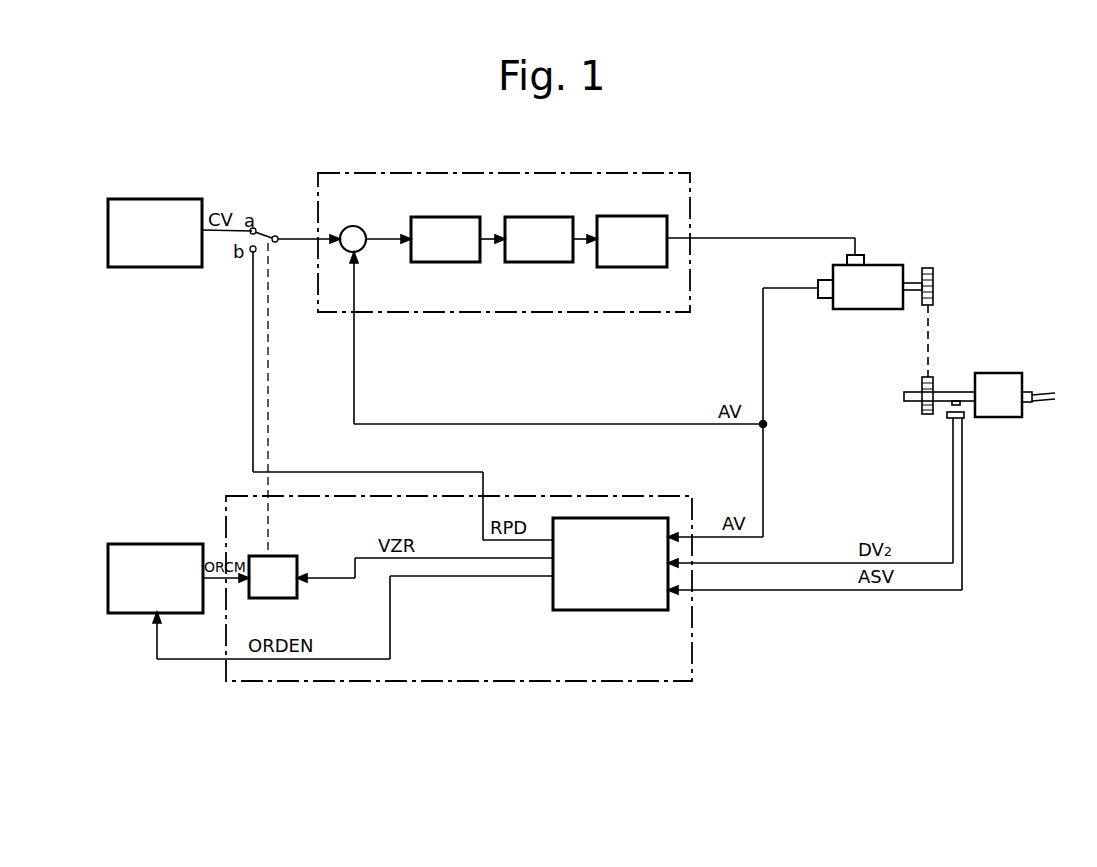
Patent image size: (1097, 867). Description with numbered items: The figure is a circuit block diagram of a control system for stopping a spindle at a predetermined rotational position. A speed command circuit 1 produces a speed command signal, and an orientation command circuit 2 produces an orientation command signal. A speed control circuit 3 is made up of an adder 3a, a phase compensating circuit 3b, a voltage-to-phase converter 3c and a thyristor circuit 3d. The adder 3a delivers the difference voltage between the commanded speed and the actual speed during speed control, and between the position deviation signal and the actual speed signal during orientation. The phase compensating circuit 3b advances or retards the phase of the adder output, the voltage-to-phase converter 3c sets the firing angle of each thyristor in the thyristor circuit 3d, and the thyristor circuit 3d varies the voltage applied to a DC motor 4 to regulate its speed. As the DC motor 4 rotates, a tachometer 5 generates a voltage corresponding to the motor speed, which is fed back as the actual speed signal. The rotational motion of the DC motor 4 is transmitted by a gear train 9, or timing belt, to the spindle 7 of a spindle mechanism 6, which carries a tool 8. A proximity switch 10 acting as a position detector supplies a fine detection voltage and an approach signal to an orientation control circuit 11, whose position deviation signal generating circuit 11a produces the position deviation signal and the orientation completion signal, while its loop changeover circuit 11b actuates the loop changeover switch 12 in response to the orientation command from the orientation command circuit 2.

The speed command circuit 1 is at (151, 268).
The orientation command circuit 2 is at (152, 544).
The speed control circuit 3 is at (370, 178).
The adder 3a is at (362, 228).
The phase compensating circuit 3b is at (436, 217).
The voltage-to-phase converter 3c is at (525, 217).
The thyristor circuit 3d is at (618, 216).
The DC motor 4 is at (884, 265).
The tachometer 5 is at (826, 299).
The spindle mechanism 6 is at (1009, 372).
The spindle 7 is at (952, 384).
The tool 8 is at (1046, 394).
The gear train 9 is at (932, 333).
The proximity switch 10 is at (929, 418).
The orientation control circuit 11 is at (577, 682).
The position deviation signal generating circuit 11a is at (610, 612).
The loop changeover circuit 11b is at (286, 562).
The loop changeover switch 12 is at (270, 234).